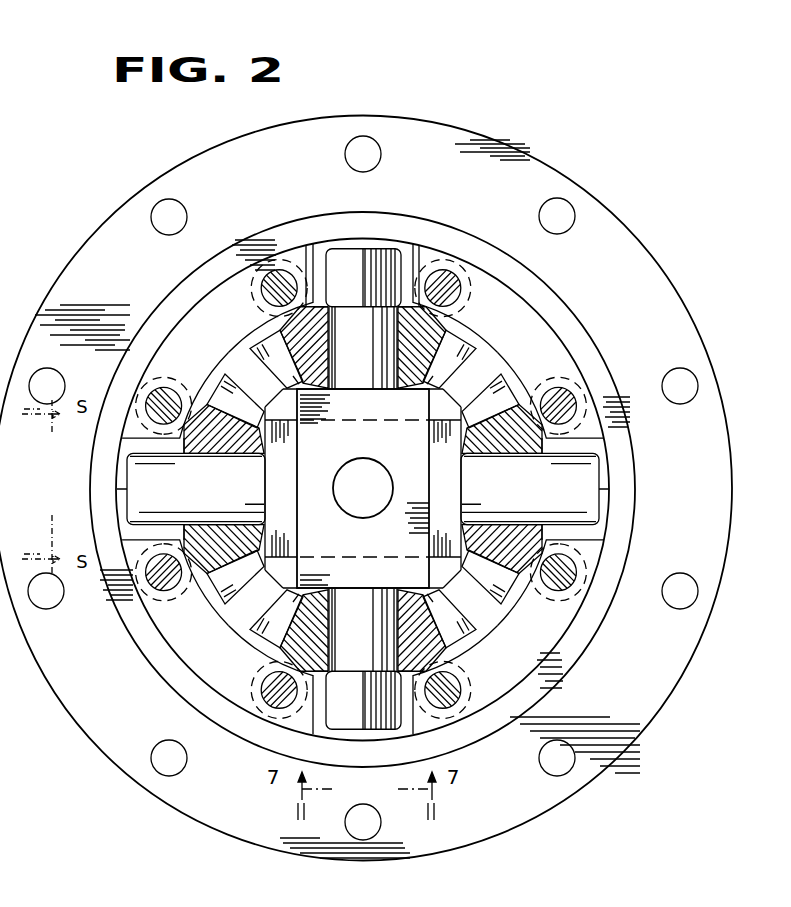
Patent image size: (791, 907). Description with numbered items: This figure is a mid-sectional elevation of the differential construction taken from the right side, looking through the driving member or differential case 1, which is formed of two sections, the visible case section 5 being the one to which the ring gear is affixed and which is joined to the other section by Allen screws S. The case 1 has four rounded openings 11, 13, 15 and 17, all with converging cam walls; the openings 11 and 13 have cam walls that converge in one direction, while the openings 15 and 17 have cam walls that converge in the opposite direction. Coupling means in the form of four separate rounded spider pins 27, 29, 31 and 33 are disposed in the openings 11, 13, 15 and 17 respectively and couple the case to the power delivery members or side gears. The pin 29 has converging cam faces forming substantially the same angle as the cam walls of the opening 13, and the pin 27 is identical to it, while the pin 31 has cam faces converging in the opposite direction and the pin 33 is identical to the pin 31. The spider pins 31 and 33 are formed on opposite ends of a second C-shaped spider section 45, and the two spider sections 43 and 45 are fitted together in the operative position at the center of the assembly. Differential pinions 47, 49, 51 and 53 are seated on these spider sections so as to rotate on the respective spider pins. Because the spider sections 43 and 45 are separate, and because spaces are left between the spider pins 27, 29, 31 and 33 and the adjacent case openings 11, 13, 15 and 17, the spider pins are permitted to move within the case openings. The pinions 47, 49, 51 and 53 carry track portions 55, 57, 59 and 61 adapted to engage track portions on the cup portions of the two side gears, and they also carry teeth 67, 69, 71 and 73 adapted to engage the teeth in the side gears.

The driving member or differential case 1 is at (645, 239).
The case section 5 is at (527, 822).
The rounded opening 11 is at (402, 255).
The rounded opening 13 is at (360, 766).
The rounded opening 15 is at (124, 441).
The rounded opening 17 is at (595, 536).
The spider pin 27 is at (352, 348).
The spider pin 29 is at (352, 631).
The spider pin 31 is at (186, 498).
The spider pin 33 is at (519, 498).
The spider section 43 is at (384, 451).
The C-shaped spider section 45 is at (433, 491).
The differential pinion 47 is at (440, 326).
The differential pinion 49 is at (300, 650).
The differential pinion 51 is at (212, 550).
The differential pinion 53 is at (511, 579).
The track portion 55 is at (292, 318).
The track portion 57 is at (446, 672).
The track portion 59 is at (201, 420).
The track portion 61 is at (528, 414).
The teeth 67 is at (459, 350).
The teeth 69 is at (262, 626).
The teeth 71 is at (236, 392).
The teeth 73 is at (498, 590).
The Allen screws S is at (452, 284).